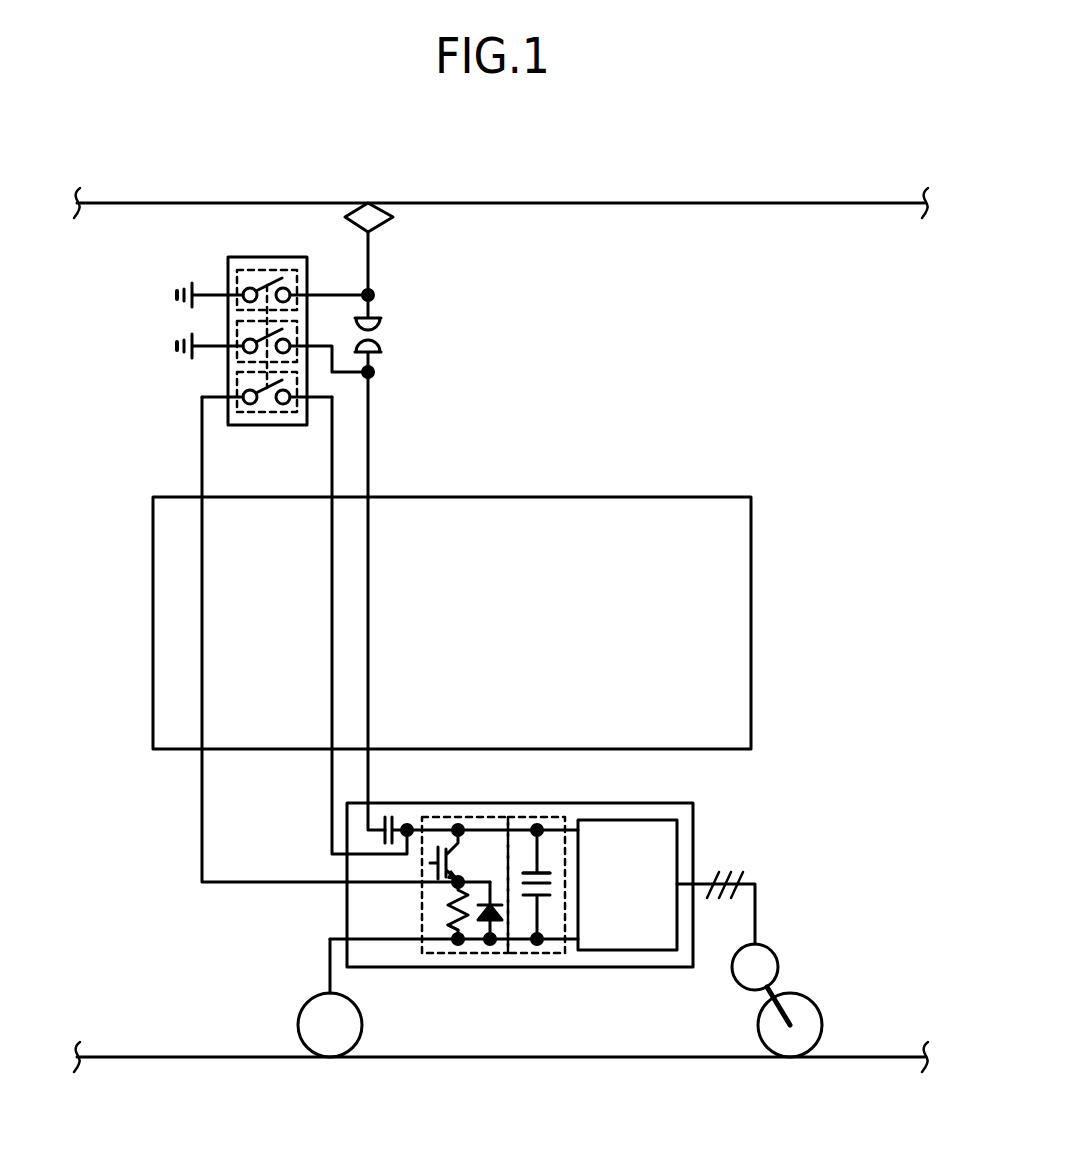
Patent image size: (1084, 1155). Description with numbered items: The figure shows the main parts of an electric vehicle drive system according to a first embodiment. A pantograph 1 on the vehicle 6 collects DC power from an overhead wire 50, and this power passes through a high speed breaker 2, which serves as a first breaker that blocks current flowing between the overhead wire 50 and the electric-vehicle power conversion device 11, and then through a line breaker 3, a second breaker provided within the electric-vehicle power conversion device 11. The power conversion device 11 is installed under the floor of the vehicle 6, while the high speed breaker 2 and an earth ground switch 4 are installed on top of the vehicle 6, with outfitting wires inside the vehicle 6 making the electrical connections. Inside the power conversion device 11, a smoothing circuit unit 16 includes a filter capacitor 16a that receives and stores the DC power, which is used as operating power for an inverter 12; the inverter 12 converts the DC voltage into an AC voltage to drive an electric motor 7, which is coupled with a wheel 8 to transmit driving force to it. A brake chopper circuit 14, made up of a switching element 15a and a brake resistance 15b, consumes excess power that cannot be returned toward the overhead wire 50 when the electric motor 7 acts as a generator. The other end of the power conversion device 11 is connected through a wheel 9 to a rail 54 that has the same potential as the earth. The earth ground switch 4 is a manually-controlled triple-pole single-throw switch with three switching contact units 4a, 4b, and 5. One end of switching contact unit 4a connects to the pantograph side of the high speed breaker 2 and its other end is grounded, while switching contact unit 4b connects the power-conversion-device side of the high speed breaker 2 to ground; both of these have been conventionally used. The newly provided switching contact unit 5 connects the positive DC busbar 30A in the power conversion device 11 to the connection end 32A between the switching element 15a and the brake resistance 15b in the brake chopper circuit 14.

The overhead wire 50 is at (862, 202).
The rail 54 is at (862, 1057).
The pantograph 1 is at (380, 227).
The high speed breaker 2 is at (382, 331).
The line breaker 3 is at (397, 818).
The earth ground switch 4 is at (247, 257).
The switching contact unit 4a is at (232, 282).
The switching contact unit 4b is at (232, 335).
The switching contact unit 5 is at (232, 387).
The vehicle 6 is at (670, 497).
The electric motor 7 is at (778, 955).
The wheel 8 is at (759, 1028).
The wheel 9 is at (298, 1025).
The electric-vehicle power conversion device 11 is at (694, 828).
The inverter 12 is at (627, 951).
The brake chopper circuit 14 is at (459, 953).
The switching element 15a is at (437, 867).
The brake resistance 15b is at (452, 920).
The smoothing circuit unit 16 is at (545, 952).
The filter capacitor 16a is at (527, 897).
The positive DC busbar 30A is at (439, 821).
The connection end 32A is at (463, 878).